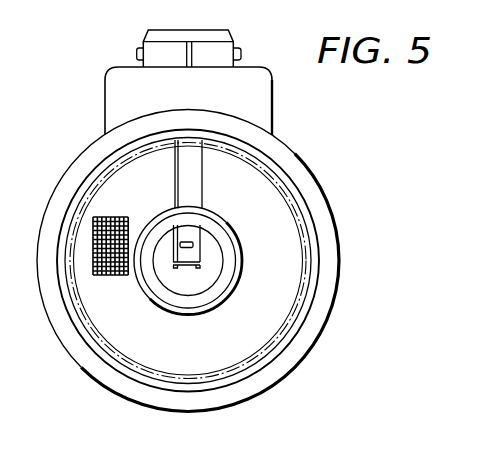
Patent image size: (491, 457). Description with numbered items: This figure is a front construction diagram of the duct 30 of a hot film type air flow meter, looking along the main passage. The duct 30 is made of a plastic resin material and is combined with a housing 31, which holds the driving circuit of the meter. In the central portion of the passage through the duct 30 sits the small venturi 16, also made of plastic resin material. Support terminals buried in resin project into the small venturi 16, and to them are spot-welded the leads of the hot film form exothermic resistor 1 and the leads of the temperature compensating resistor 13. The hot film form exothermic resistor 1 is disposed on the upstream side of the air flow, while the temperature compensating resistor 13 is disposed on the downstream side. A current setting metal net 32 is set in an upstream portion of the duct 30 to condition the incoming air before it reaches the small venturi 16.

The hot film form exothermic resistor 1 is at (190, 267).
The temperature compensating resistor 13 is at (181, 249).
The small venturi 16 is at (236, 289).
The duct 30 is at (76, 344).
The housing 31 is at (113, 78).
The current setting metal net 32 is at (110, 216).